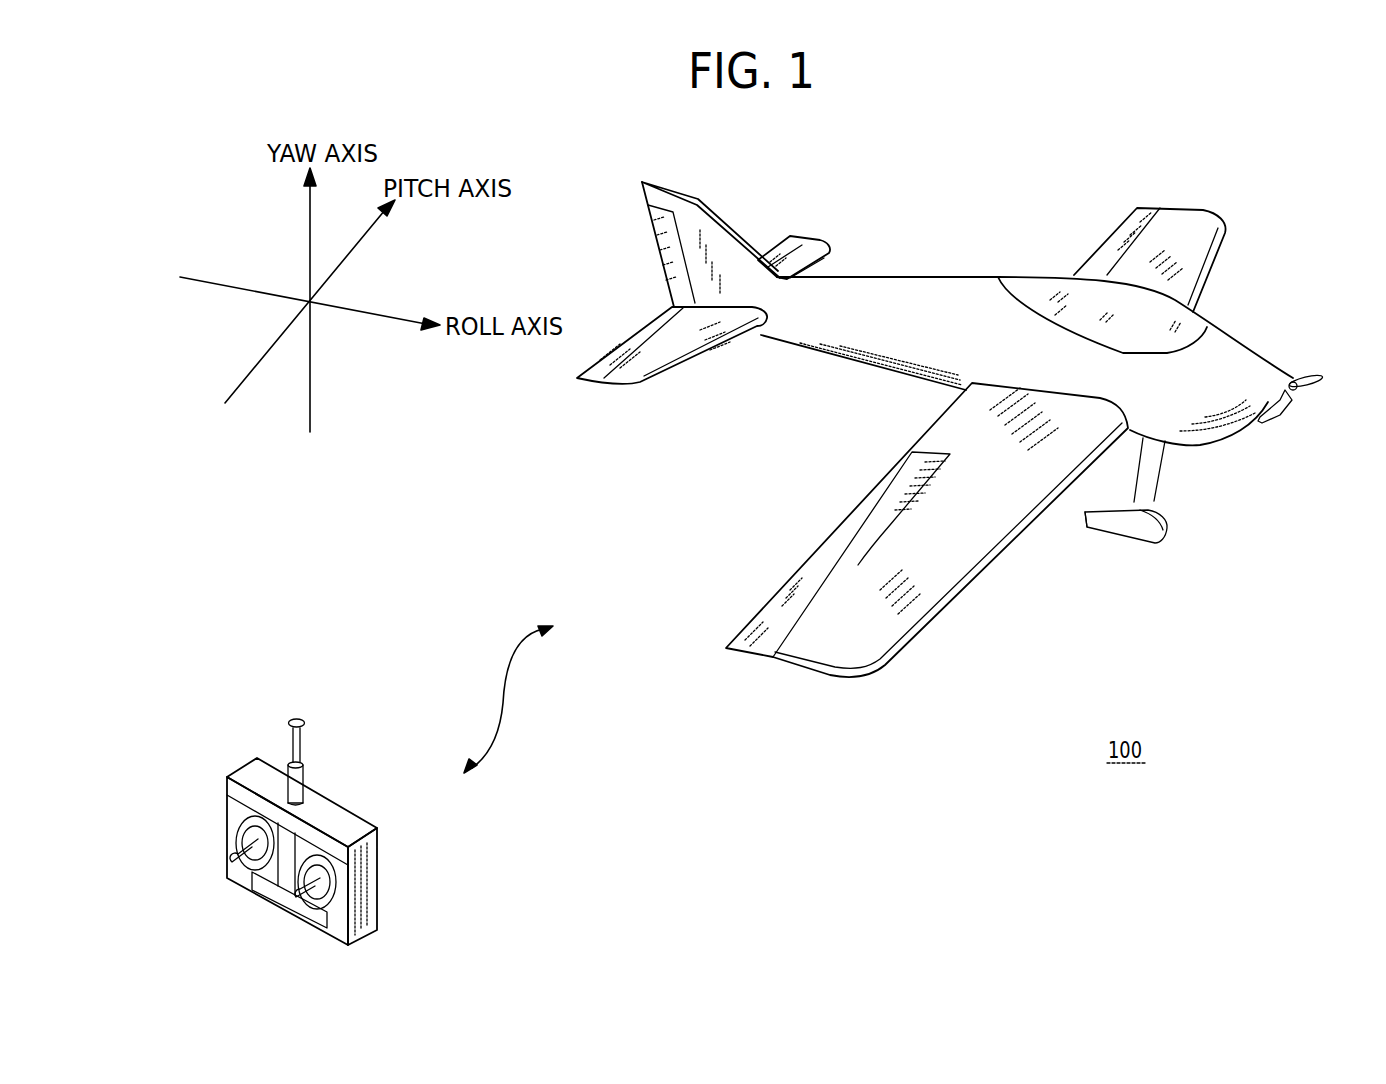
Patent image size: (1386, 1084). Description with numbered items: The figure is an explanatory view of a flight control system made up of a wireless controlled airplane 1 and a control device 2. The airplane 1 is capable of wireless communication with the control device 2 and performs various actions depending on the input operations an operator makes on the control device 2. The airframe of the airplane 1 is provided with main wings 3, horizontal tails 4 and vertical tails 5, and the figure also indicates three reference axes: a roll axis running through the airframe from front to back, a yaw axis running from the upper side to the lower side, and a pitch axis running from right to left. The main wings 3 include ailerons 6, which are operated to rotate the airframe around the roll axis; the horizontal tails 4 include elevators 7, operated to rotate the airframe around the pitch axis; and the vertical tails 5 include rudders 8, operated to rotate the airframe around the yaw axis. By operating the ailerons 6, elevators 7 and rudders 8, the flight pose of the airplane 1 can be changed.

The wireless controlled airplane 1 is at (928, 282).
The control device 2 is at (367, 890).
The main wings 3 is at (955, 573).
The horizontal tails 4 is at (687, 345).
The vertical tails 5 is at (698, 220).
The ailerons 6 is at (825, 557).
The elevators 7 is at (640, 343).
The rudders 8 is at (660, 243).